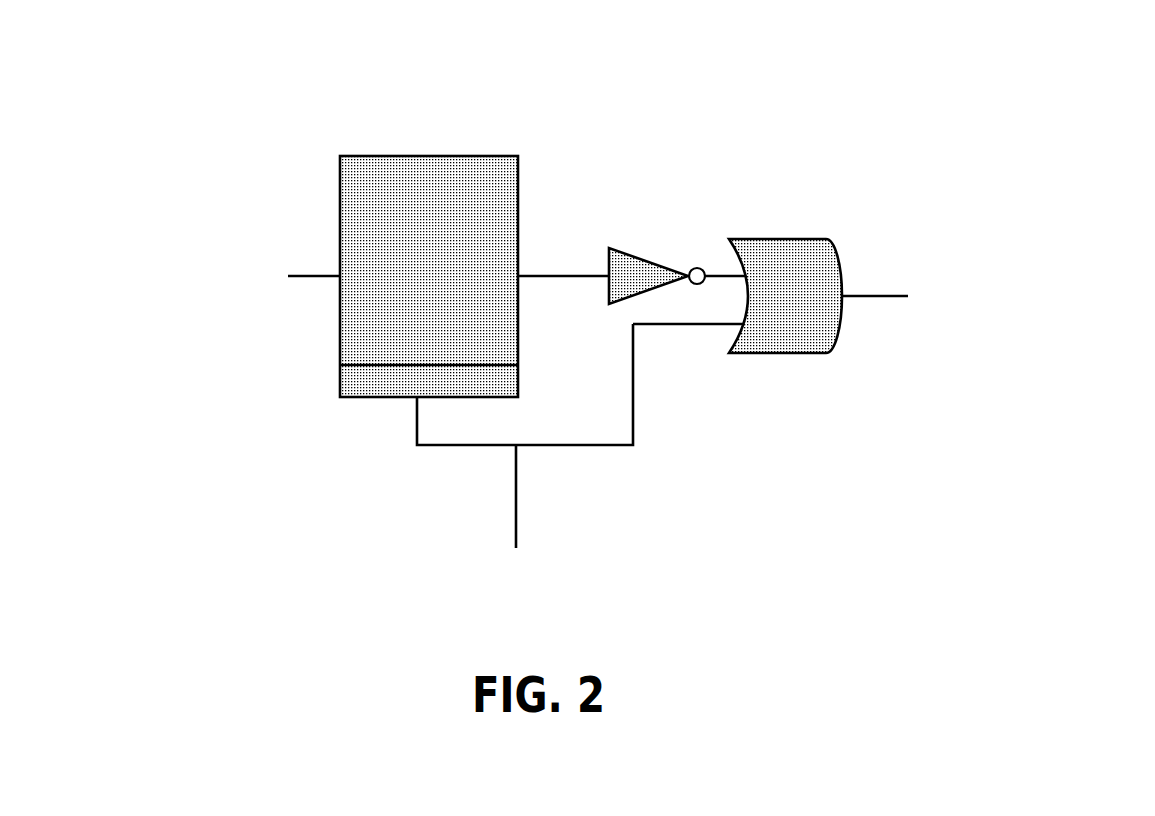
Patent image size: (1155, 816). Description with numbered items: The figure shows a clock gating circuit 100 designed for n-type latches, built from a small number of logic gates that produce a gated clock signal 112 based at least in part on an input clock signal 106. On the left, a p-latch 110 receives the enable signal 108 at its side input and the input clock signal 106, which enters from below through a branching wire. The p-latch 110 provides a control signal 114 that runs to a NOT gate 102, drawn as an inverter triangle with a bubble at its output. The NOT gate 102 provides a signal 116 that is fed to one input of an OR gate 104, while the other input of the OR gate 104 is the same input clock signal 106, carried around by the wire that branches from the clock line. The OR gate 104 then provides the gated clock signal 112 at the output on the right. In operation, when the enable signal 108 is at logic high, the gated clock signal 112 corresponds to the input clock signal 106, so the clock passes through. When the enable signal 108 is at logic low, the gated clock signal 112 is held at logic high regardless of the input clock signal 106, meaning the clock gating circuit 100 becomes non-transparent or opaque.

The clock gating circuit 100 is at (871, 113).
The NOT gate 102 is at (640, 241).
The OR gate 104 is at (782, 256).
The input clock signal 106 is at (580, 467).
The enable signal 108 is at (247, 248).
The p-latch 110 is at (423, 240).
The gated clock signal 112 is at (979, 263).
The control signal 114 is at (563, 309).
The signal 116 is at (698, 213).